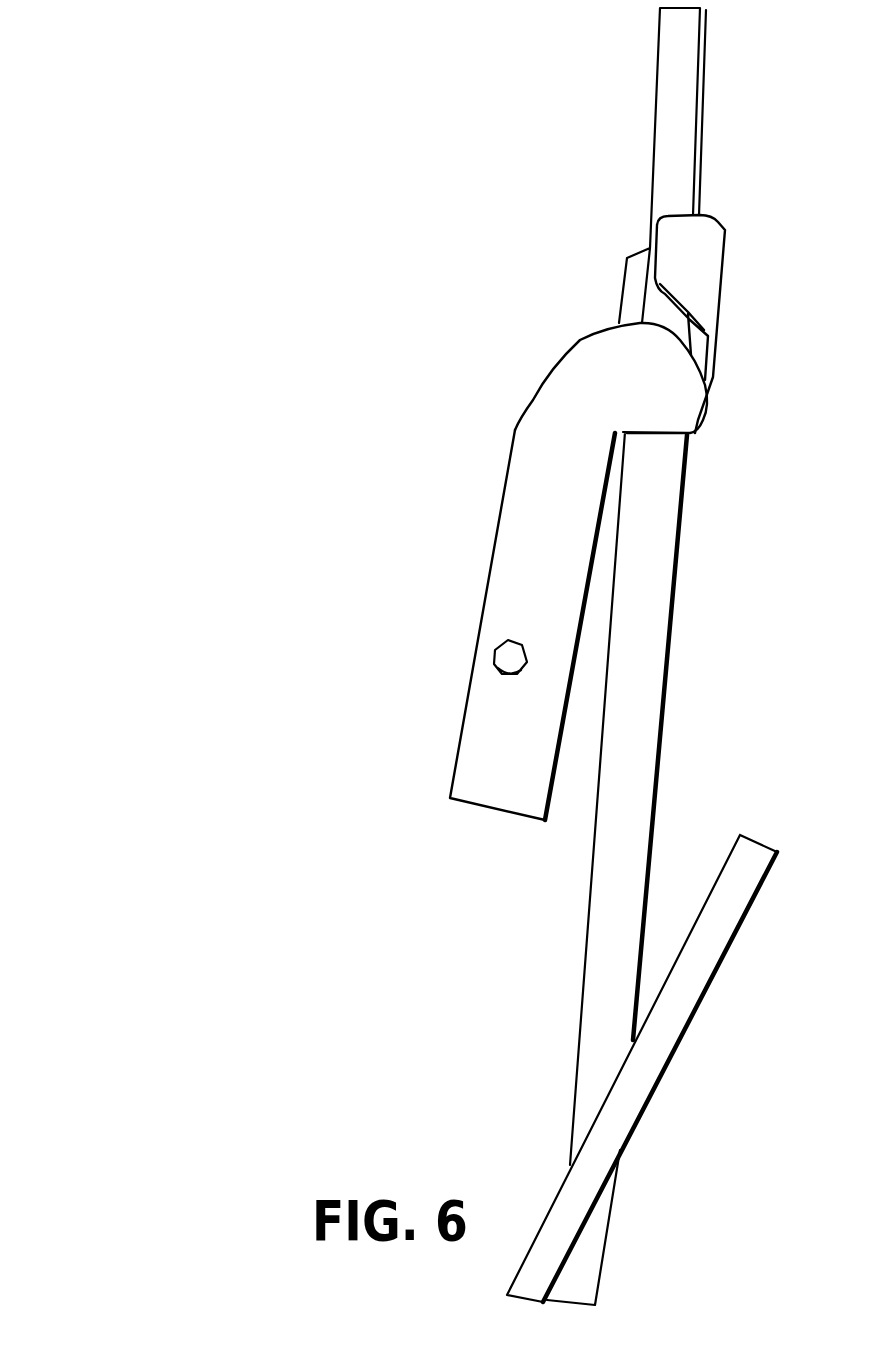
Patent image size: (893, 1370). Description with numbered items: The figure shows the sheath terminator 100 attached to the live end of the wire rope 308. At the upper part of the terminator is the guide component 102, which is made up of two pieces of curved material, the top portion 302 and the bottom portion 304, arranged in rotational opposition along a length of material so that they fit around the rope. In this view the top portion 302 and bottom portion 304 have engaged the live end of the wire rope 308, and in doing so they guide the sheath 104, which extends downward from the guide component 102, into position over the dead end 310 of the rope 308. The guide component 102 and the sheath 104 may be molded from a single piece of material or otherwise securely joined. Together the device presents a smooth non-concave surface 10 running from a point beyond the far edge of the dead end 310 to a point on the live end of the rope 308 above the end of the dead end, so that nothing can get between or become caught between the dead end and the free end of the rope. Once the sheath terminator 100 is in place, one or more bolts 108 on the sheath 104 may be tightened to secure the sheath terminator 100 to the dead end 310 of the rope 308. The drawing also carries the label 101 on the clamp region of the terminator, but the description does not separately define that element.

The smooth non-concave surface 10 is at (507, 472).
The sheath terminator 100 is at (480, 748).
The clamp 101 is at (618, 345).
The guide component 102 is at (505, 573).
The sheath 104 is at (533, 513).
The bolt 108 is at (493, 652).
The top portion 302 is at (673, 258).
The bottom portion 304 is at (627, 382).
The wire rope 308 is at (603, 872).
The dead end 310 is at (703, 955).